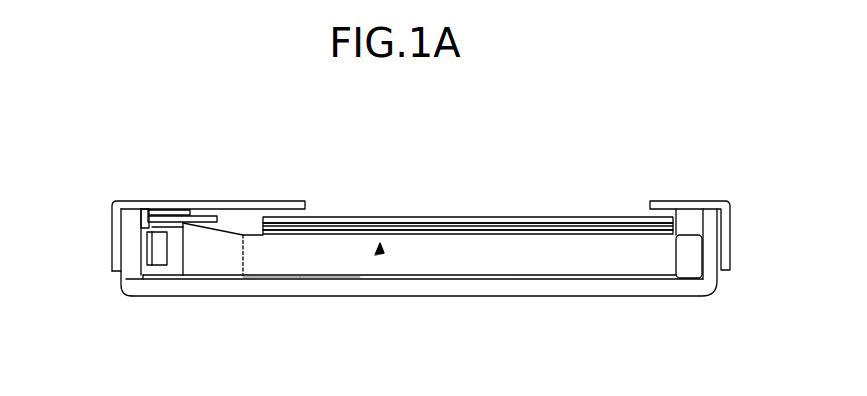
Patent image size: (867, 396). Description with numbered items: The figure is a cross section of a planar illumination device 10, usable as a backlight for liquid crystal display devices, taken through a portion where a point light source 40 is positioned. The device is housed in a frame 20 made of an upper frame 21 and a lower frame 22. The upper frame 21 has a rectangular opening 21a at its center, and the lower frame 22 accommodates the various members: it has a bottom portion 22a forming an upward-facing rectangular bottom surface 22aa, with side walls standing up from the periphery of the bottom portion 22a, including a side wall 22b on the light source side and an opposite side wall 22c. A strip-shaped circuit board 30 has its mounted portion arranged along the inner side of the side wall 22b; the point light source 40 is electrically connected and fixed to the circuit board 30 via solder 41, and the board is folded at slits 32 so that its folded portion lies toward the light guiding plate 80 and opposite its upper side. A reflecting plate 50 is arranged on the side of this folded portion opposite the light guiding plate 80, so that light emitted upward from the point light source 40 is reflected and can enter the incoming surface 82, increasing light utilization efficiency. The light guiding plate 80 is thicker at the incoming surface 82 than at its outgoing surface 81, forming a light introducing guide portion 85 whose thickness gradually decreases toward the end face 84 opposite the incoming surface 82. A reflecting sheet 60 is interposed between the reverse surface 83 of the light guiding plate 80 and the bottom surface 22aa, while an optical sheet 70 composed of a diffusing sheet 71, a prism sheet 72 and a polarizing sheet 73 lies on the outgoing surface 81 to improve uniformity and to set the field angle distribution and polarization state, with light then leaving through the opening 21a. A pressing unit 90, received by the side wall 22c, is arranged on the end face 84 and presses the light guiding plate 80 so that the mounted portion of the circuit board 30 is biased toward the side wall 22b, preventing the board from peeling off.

The planar illumination device 10 is at (335, 131).
The frame 20 is at (69, 245).
The upper frame 21 is at (112, 239).
The opening 21a is at (650, 201).
The lower frame 22 is at (122, 290).
The bottom portion 22a is at (485, 290).
The bottom surface 22aa is at (465, 277).
The side wall 22b is at (128, 216).
The side wall 22c is at (710, 218).
The circuit board 30 is at (188, 212).
The slits 32 is at (146, 212).
The point light source 40 is at (158, 266).
The solder 41 is at (150, 264).
The reflecting plate 50 is at (202, 216).
The reflecting sheet 60 is at (303, 280).
The optical sheet 70 is at (346, 172).
The diffusing sheet 71 is at (352, 217).
The prism sheet 72 is at (383, 225).
The polarizing sheet 73 is at (418, 231).
The light guiding plate 80 is at (546, 262).
The outgoing surface 81 is at (379, 254).
The incoming surface 82 is at (183, 262).
The reverse surface 83 is at (265, 280).
The end face 84 is at (680, 236).
The light introducing guide portion 85 is at (217, 243).
The pressing unit 90 is at (690, 273).